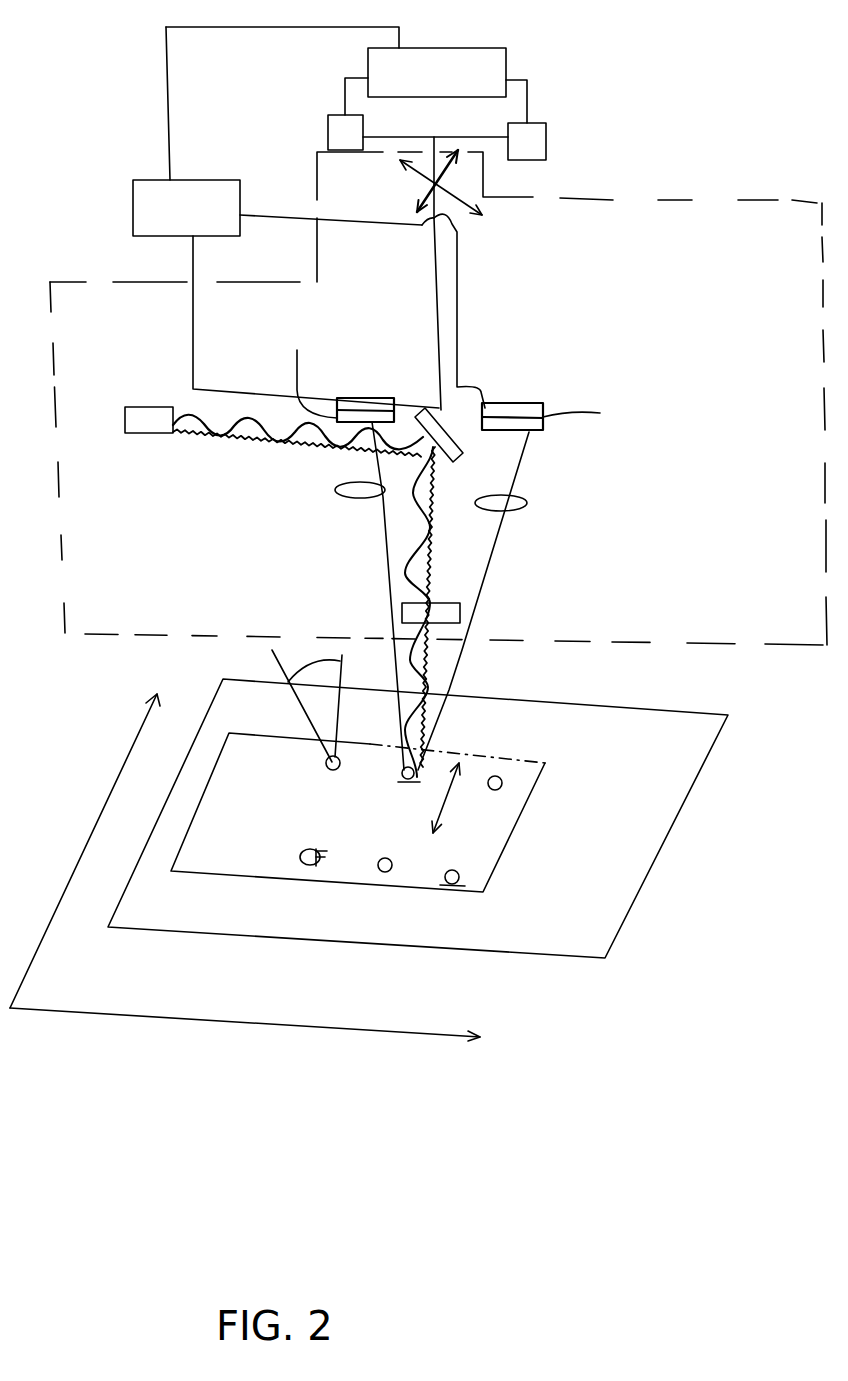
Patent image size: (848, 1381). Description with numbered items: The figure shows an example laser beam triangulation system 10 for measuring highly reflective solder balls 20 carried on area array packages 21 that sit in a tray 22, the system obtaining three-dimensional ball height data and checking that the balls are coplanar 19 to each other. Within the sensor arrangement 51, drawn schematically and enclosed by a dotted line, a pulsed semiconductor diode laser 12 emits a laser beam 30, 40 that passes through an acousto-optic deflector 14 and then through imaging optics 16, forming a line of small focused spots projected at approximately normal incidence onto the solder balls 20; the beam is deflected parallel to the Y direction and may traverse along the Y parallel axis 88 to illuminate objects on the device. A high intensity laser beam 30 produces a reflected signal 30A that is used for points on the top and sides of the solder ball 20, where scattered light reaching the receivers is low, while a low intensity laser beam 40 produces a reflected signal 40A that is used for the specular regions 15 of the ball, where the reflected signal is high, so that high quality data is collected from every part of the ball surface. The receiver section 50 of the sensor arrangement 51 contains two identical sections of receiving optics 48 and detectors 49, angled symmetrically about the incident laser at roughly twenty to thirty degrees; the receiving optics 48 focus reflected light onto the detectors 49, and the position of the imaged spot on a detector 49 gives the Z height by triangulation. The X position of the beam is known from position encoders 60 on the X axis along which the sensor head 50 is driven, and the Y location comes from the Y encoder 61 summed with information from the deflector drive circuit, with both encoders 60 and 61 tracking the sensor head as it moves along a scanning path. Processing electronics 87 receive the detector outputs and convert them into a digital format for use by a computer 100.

The computer 100 is at (507, 48).
The position encoders 60 is at (418, 114).
The Y encoder 61 is at (526, 120).
The processing electronics 87 is at (133, 197).
The laser beam triangulation system 10 is at (675, 375).
The pulsed semiconductor diode laser 12 is at (130, 410).
The detectors 49 is at (451, 377).
The receiver section 50 is at (372, 398).
The sensor arrangement 51 is at (387, 390).
The acousto-optic deflector 14 is at (460, 445).
The receiving optics 48 is at (335, 491).
The reflected signal 30A is at (383, 522).
The high intensity laser beam 30 is at (421, 522).
The low intensity laser beam 40 is at (440, 522).
The reflected signal 40A is at (500, 530).
The imaging optics 16 is at (460, 613).
The specular regions 15 is at (346, 716).
The solder balls 20 is at (503, 783).
The Y parallel axis 88 is at (448, 803).
The coplanarity 19 is at (518, 870).
The area array packages 21 is at (218, 873).
The tray 22 is at (128, 920).